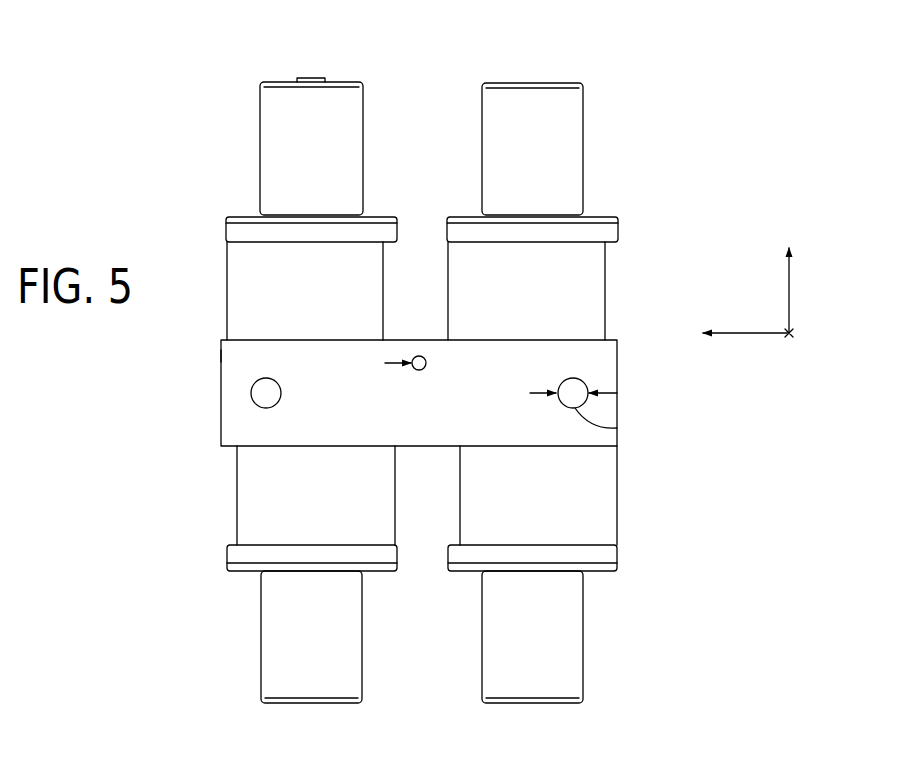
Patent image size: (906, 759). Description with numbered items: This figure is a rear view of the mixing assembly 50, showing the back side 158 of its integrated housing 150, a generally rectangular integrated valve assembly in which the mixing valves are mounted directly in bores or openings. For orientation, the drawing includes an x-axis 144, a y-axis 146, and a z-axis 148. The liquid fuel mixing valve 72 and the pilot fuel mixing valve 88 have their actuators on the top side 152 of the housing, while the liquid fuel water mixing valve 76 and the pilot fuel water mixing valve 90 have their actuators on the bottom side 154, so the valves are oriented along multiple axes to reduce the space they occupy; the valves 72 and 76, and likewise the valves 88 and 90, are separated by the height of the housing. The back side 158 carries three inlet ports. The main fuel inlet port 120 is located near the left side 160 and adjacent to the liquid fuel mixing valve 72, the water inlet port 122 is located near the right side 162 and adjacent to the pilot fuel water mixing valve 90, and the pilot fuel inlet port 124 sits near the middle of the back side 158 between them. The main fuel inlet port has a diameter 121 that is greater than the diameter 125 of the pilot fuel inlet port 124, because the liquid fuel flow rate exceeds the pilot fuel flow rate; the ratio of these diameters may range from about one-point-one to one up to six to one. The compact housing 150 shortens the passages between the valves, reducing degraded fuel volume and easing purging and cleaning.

The mixing assembly 50 is at (175, 65).
The liquid fuel mixing valve 72 is at (605, 180).
The liquid fuel water mixing valve 76 is at (595, 582).
The pilot fuel mixing valve 88 is at (242, 208).
The pilot fuel water mixing valve 90 is at (250, 612).
The main fuel inlet port 120 is at (617, 428).
The diameter 121 is at (534, 391).
The water inlet port 122 is at (221, 356).
The pilot fuel inlet port 124 is at (414, 357).
The diameter 125 is at (428, 363).
The x-axis 144 is at (748, 334).
The y-axis 146 is at (789, 340).
The z-axis 148 is at (789, 298).
The integrated housing 150 is at (218, 432).
The top side 152 is at (416, 340).
The bottom side 154 is at (420, 448).
The back side 158 is at (607, 348).
The left side 160 is at (617, 380).
The right side 162 is at (258, 381).